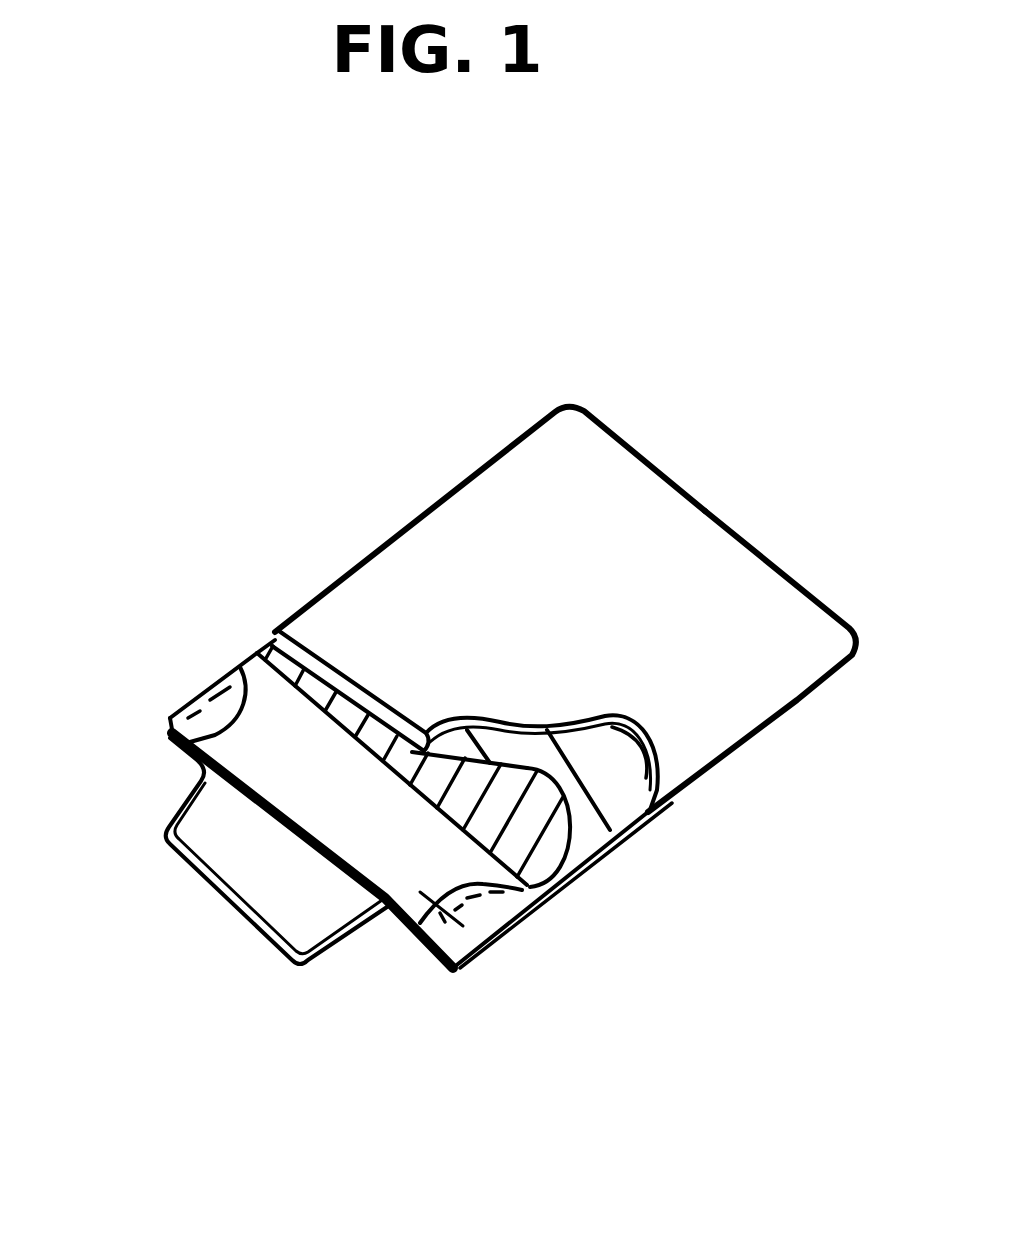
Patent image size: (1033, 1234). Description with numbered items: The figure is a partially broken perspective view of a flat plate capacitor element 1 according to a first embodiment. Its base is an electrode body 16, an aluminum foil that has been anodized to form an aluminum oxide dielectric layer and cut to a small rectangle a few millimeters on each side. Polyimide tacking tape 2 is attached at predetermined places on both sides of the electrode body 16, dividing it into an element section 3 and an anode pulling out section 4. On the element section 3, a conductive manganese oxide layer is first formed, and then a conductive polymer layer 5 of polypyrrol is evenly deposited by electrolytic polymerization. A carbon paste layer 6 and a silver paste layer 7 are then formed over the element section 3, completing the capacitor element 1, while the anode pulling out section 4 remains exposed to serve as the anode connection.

The capacitor element 1 is at (781, 560).
The polyimide tacking tape 2 is at (503, 930).
The element section 3 is at (549, 330).
The anode pulling out section 4 is at (163, 718).
The conductive polymer layer 5 is at (533, 857).
The carbon paste layer 6 is at (625, 772).
The silver paste layer 7 is at (602, 467).
The electrode body 16 is at (267, 852).